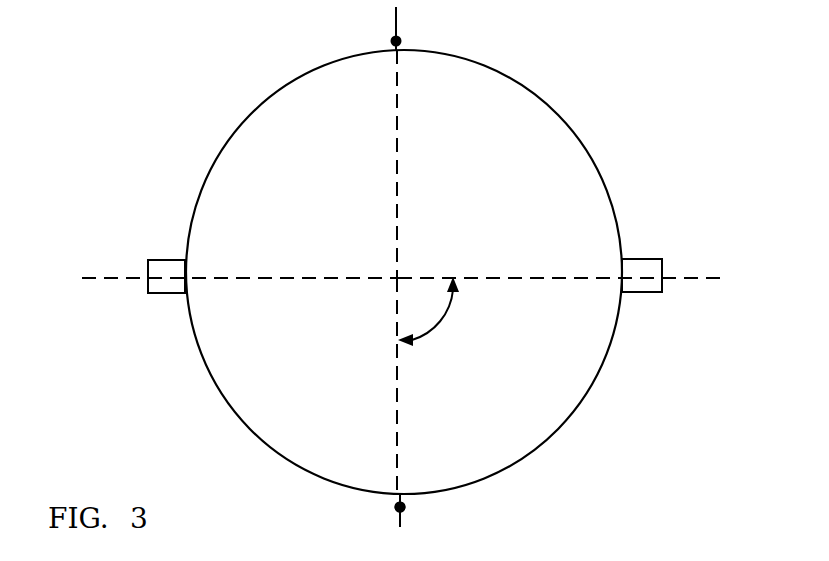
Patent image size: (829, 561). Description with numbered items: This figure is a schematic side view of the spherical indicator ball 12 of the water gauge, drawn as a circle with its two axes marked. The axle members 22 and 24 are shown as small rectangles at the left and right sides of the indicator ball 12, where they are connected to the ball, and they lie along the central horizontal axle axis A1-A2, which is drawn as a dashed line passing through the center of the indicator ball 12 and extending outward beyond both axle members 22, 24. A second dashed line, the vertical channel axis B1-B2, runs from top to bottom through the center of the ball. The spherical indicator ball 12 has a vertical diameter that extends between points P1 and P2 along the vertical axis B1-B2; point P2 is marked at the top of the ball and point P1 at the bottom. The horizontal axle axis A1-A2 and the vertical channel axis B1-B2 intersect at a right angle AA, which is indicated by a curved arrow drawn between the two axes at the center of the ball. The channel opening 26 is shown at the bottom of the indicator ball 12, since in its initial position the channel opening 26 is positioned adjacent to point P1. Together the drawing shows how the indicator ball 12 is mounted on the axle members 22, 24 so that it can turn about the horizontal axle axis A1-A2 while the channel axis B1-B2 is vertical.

The spherical indicator ball 12 is at (597, 162).
The axle member 22 is at (148, 293).
The axle member 24 is at (635, 292).
The channel opening 26 is at (403, 495).
The right angle AA is at (440, 326).
The horizontal axle axis end A1 is at (218, 280).
The horizontal axle axis end A2 is at (578, 278).
The vertical channel axis end B1 is at (385, 413).
The vertical channel axis end B2 is at (377, 139).
The point P1 is at (395, 506).
The point P2 is at (400, 38).